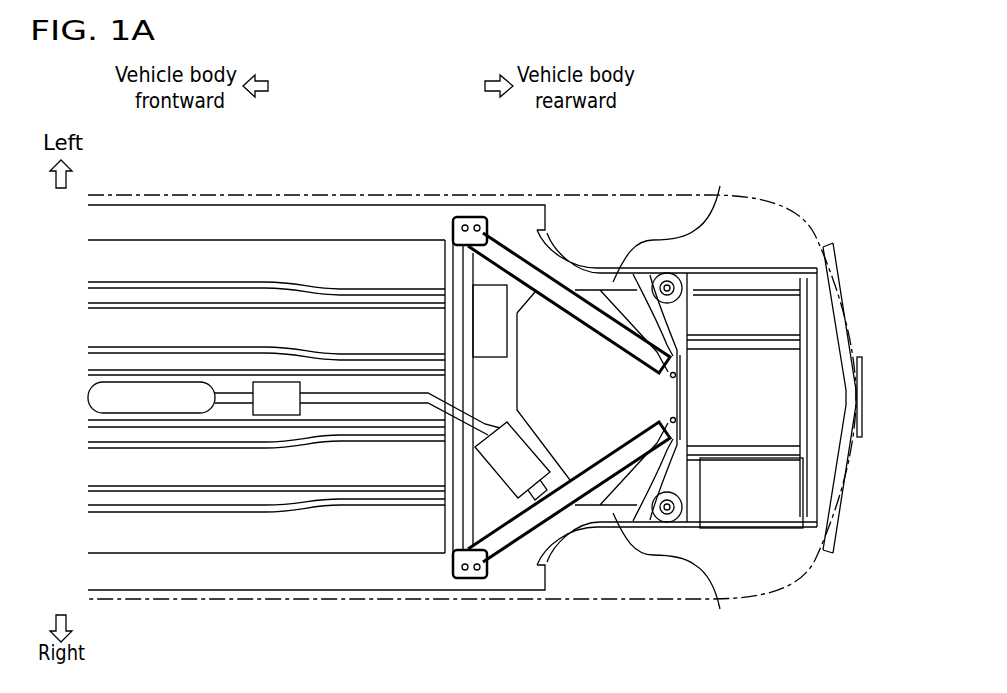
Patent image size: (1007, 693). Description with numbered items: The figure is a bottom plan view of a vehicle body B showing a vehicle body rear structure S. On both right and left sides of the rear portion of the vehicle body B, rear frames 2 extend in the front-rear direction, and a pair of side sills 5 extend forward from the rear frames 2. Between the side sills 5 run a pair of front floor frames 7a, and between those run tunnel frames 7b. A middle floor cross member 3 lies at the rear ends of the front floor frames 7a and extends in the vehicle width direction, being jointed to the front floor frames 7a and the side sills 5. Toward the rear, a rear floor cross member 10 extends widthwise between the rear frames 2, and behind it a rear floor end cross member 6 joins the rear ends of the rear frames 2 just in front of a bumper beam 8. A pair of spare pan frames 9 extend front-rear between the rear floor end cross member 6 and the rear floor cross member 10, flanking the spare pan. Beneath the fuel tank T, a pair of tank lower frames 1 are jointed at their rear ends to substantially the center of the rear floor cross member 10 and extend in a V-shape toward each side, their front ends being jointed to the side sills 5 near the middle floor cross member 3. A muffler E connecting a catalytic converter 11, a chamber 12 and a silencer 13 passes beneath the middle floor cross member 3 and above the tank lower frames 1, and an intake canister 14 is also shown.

The vehicle body B is at (157, 197).
The vehicle body rear structure S is at (694, 132).
The tank lower frame 1 is at (525, 275).
The rear frame 2 is at (593, 620).
The middle floor cross member 3 is at (457, 343).
The side sill 5 is at (345, 205).
The rear floor end cross member 6 is at (807, 395).
The front floor frame 7a is at (183, 295).
The tunnel frame 7b is at (183, 360).
The bumper beam 8 is at (850, 323).
The spare pan frame 9 is at (757, 337).
The rear floor cross member 10 is at (677, 343).
The catalytic converter 11 is at (107, 397).
The chamber 12 is at (512, 468).
The silencer 13 is at (732, 512).
The intake canister 14 is at (485, 310).
The muffler E is at (368, 397).
The fuel tank T is at (587, 423).